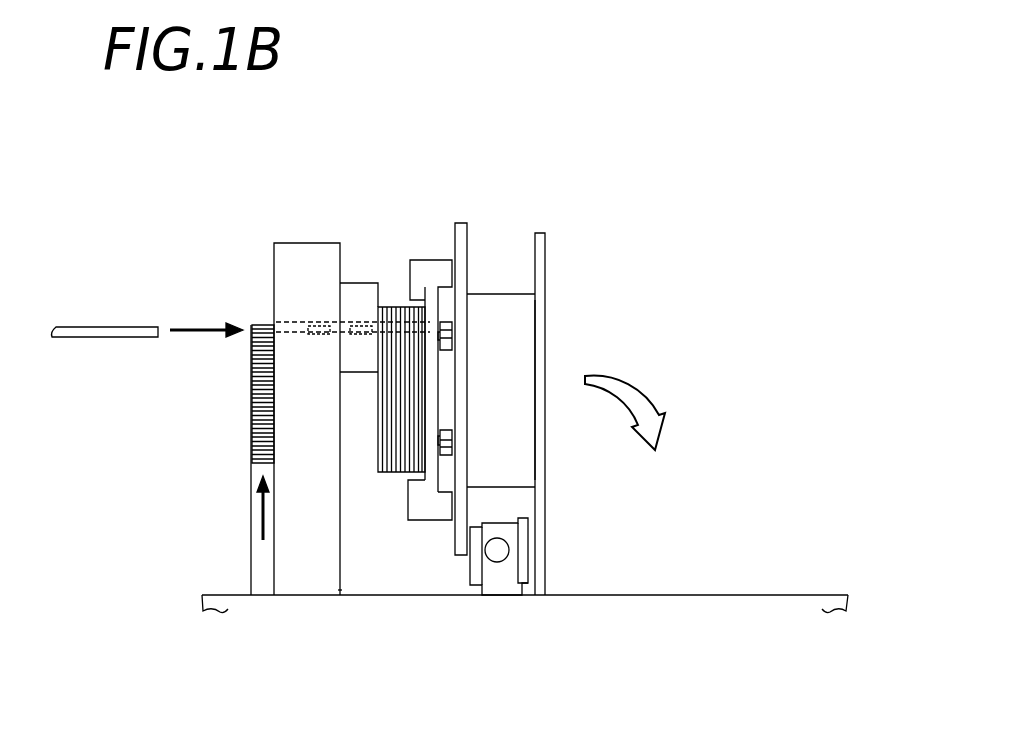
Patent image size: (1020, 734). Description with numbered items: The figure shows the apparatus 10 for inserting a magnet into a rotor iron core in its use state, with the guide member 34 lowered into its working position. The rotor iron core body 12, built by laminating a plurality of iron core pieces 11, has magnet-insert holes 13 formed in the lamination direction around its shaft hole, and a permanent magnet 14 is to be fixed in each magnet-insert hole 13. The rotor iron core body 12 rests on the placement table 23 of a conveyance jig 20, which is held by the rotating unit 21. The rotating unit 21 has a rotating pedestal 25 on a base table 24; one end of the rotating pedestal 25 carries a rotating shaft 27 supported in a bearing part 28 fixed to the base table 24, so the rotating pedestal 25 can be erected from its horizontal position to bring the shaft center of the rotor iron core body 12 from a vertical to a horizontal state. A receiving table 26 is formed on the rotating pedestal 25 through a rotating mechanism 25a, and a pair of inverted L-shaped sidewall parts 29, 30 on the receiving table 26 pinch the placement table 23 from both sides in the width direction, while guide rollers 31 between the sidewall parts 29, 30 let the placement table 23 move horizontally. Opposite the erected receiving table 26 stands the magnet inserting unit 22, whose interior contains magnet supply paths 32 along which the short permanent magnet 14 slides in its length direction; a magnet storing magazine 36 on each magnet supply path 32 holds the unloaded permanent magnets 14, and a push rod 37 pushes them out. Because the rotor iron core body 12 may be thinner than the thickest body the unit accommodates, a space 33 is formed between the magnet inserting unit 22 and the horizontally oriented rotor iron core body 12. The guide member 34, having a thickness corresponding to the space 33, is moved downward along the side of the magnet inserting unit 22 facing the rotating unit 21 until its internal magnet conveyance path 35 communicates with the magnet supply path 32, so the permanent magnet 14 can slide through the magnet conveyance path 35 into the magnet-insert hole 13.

The apparatus for inserting the magnet into the rotor iron core 10 is at (438, 150).
The iron core piece 11 is at (385, 473).
The rotor iron core body 12 is at (357, 442).
The magnet-insert hole 13 is at (400, 305).
The permanent magnet 14 is at (357, 328).
The conveyance jig 20 is at (433, 278).
The rotating unit 21 is at (516, 230).
The magnet inserting unit 22 is at (325, 170).
The placement table 23 is at (428, 298).
The base table 24 is at (214, 603).
The rotating pedestal 25 is at (546, 243).
The rotating mechanism 25a is at (526, 352).
The receiving table 26 is at (470, 218).
The rotating shaft 27 is at (497, 552).
The bearing part 28 is at (503, 578).
The sidewall part 29 is at (438, 512).
The sidewall part 30 is at (423, 260).
The guide roller 31 is at (452, 335).
The magnet supply path 32 is at (300, 320).
The space 33 is at (349, 597).
The guide member 34 is at (352, 281).
The magnet conveyance path 35 is at (367, 318).
The magnet storing magazine 36 is at (254, 319).
The push rod 37 is at (118, 325).